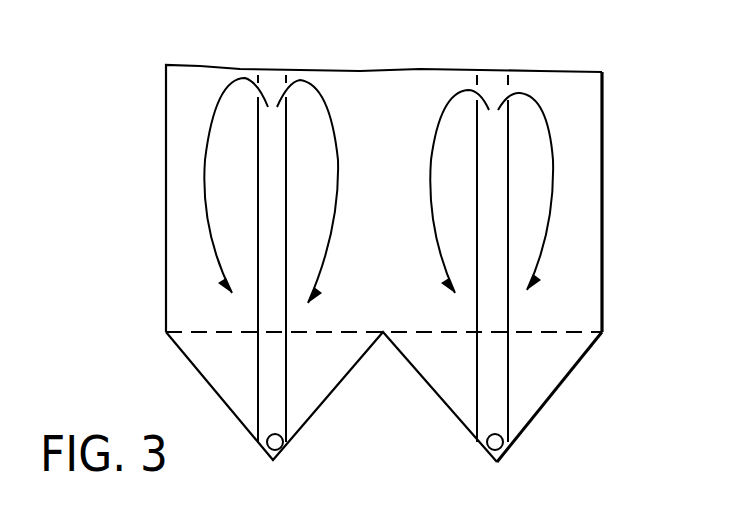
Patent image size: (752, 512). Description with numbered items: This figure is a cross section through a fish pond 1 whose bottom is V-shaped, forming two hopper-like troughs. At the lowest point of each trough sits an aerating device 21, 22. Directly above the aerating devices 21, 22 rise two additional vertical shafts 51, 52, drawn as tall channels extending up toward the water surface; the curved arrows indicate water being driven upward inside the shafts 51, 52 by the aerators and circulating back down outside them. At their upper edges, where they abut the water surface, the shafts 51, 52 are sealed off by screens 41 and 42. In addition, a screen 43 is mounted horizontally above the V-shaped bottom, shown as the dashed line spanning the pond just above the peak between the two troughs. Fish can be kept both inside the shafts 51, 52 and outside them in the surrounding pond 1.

The filter housing 1 is at (575, 107).
The screen 41 is at (283, 78).
The screen 42 is at (510, 82).
The screen 43 is at (340, 328).
The vertical shaft 51 is at (277, 197).
The vertical shaft 52 is at (497, 200).
The aerating device 21 is at (285, 447).
The aerating device 22 is at (505, 445).